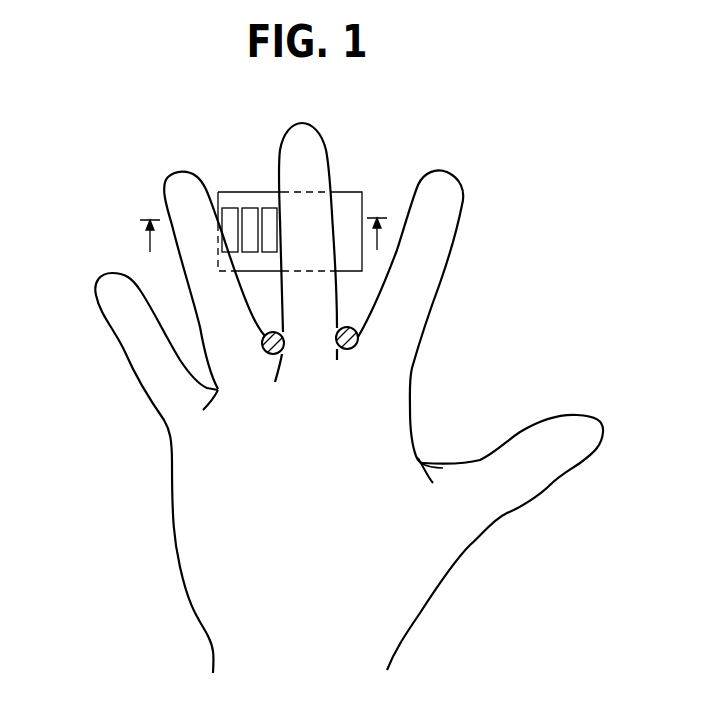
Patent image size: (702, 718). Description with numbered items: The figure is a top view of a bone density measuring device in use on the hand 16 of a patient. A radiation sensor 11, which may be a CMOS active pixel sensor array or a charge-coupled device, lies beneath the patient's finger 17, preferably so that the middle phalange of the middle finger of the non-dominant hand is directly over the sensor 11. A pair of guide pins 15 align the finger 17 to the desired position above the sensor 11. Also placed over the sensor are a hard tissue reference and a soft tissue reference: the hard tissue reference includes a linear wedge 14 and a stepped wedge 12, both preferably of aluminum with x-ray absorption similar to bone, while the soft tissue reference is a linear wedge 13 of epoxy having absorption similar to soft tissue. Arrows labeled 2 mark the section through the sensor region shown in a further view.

The section view direction indicator 2 is at (263, 250).
The radiation sensor 11 is at (362, 212).
The stepped wedge 12 is at (228, 207).
The linear wedge 13 is at (248, 207).
The linear wedge 14 is at (268, 207).
The guide pins 15 is at (268, 357).
The hand 16 is at (349, 422).
The finger 17 is at (313, 125).